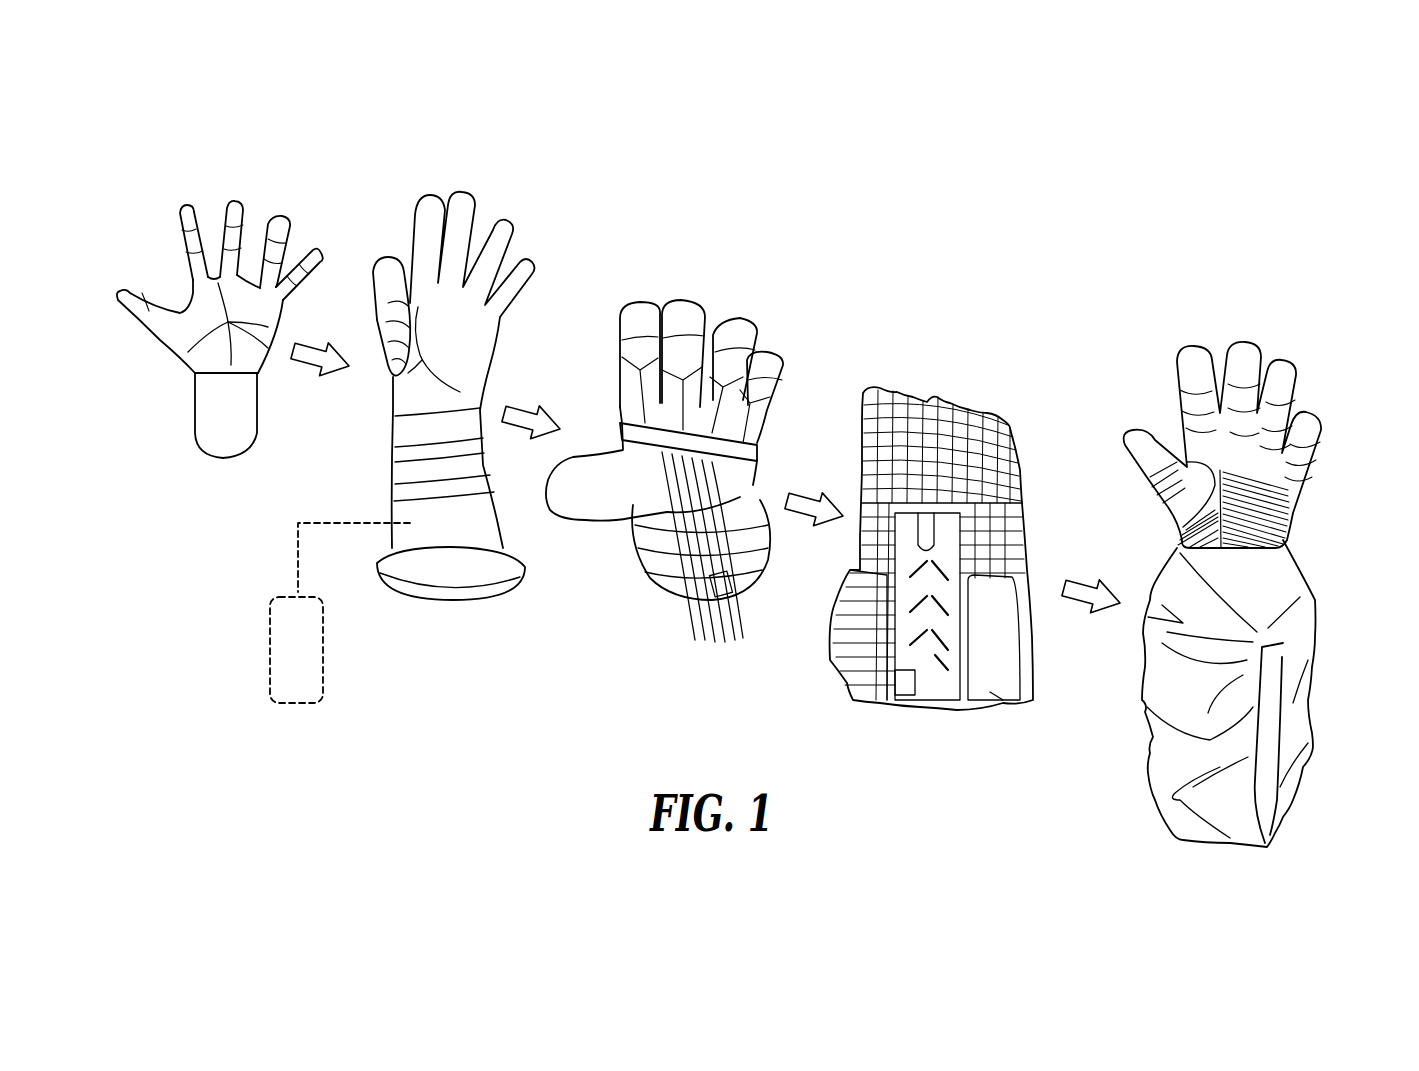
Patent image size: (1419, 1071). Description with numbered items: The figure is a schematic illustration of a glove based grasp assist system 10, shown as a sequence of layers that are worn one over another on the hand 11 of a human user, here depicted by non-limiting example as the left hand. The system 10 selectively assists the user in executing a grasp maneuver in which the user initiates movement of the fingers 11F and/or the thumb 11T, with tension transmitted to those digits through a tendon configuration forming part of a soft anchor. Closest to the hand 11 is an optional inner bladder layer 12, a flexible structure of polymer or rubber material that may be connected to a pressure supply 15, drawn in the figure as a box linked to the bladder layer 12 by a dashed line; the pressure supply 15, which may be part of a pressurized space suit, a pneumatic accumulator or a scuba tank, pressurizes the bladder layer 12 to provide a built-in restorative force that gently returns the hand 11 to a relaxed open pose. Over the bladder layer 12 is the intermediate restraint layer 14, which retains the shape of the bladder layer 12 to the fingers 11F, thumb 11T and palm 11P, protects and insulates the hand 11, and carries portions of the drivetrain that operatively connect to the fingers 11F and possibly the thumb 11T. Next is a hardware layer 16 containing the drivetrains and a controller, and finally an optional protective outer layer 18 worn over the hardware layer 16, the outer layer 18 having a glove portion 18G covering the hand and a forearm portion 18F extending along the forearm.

The grasp assist system 10 is at (1308, 317).
The hand 11 is at (179, 172).
The fingers 11F is at (237, 203).
The thumb 11T is at (133, 293).
The palm 11P is at (180, 353).
The inner bladder layer 12 is at (403, 217).
The restraint layer 14 is at (673, 563).
The pressure supply 15 is at (305, 645).
The hardware layer 16 is at (997, 453).
The protective outer layer 18 is at (1327, 632).
The glove portion 18G is at (1183, 460).
The forearm portion 18F is at (1297, 707).